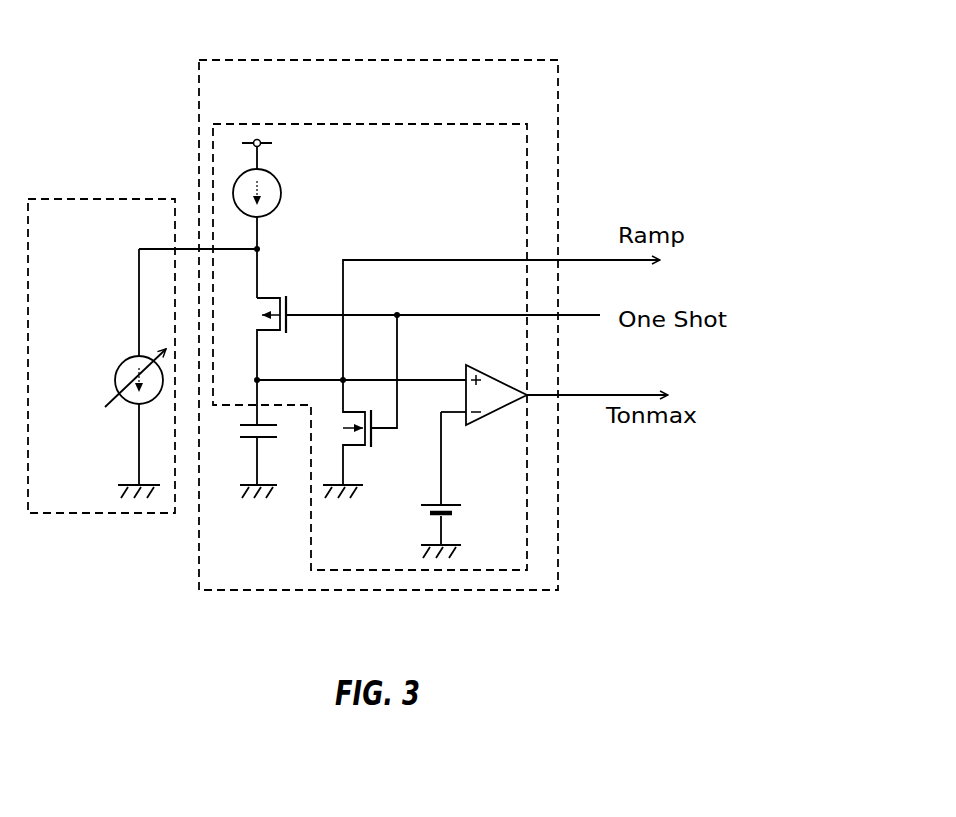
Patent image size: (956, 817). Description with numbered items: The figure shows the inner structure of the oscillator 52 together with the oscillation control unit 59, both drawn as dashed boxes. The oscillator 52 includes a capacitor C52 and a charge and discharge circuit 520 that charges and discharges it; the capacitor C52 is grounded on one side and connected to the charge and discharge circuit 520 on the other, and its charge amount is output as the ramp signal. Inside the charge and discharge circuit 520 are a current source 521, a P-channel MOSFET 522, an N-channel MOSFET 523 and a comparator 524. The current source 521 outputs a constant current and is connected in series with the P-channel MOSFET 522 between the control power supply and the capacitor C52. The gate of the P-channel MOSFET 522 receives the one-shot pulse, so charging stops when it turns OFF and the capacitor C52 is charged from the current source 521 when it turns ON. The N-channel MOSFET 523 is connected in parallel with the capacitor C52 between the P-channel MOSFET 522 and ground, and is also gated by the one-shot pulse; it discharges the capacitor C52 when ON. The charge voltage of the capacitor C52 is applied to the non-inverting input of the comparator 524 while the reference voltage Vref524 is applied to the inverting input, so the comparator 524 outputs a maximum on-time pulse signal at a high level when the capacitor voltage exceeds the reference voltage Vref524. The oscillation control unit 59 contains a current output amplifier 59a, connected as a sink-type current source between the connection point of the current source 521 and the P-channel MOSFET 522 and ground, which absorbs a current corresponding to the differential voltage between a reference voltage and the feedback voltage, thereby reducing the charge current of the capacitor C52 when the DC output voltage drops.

The oscillator 52 is at (377, 60).
The charge and discharge circuit 520 is at (428, 124).
The current source 521 is at (282, 200).
The P-channel MOSFET 522 is at (270, 297).
The N-channel MOSFET 523 is at (372, 449).
The comparator 524 is at (489, 379).
The oscillation control unit 59 is at (33, 199).
The current output amplifier 59a is at (127, 359).
The capacitor C52 is at (238, 444).
The reference voltage Vref524 is at (464, 485).